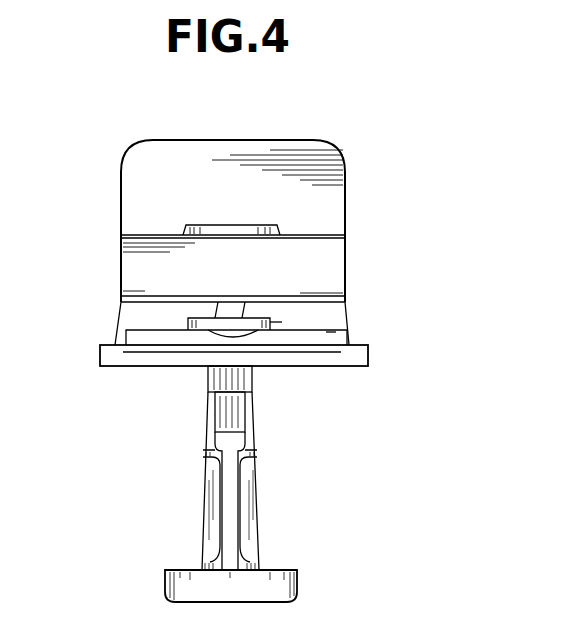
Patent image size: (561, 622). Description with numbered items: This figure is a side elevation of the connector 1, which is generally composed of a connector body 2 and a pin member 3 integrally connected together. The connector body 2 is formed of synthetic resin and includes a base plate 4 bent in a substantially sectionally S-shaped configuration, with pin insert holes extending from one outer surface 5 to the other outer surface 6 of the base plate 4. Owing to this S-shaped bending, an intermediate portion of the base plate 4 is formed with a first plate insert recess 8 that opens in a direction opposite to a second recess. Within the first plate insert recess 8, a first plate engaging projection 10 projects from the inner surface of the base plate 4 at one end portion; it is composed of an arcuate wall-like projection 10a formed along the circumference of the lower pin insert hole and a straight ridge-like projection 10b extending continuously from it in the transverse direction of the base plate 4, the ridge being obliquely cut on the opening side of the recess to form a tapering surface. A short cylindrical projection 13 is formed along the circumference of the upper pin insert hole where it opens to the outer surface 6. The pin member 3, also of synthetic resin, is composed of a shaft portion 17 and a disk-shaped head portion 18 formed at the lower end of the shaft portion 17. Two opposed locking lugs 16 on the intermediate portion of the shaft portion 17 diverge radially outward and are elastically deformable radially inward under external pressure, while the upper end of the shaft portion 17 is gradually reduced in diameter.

The connector 1 is at (412, 164).
The connector body 2 is at (350, 264).
The pin member 3 is at (190, 517).
The base plate 4 is at (128, 270).
The one outer surface 5 is at (122, 366).
The other outer surface 6 is at (140, 235).
The first plate insert recess 8 is at (117, 323).
The first plate engaging projection 10 is at (197, 331).
The arcuate wall-like projection 10a is at (285, 323).
The straight ridge-like projection 10b is at (330, 332).
The short cylindrical projection 13 is at (193, 225).
The locking lugs 16 is at (258, 420).
The shaft portion 17 is at (258, 513).
The head portion 18 is at (297, 583).